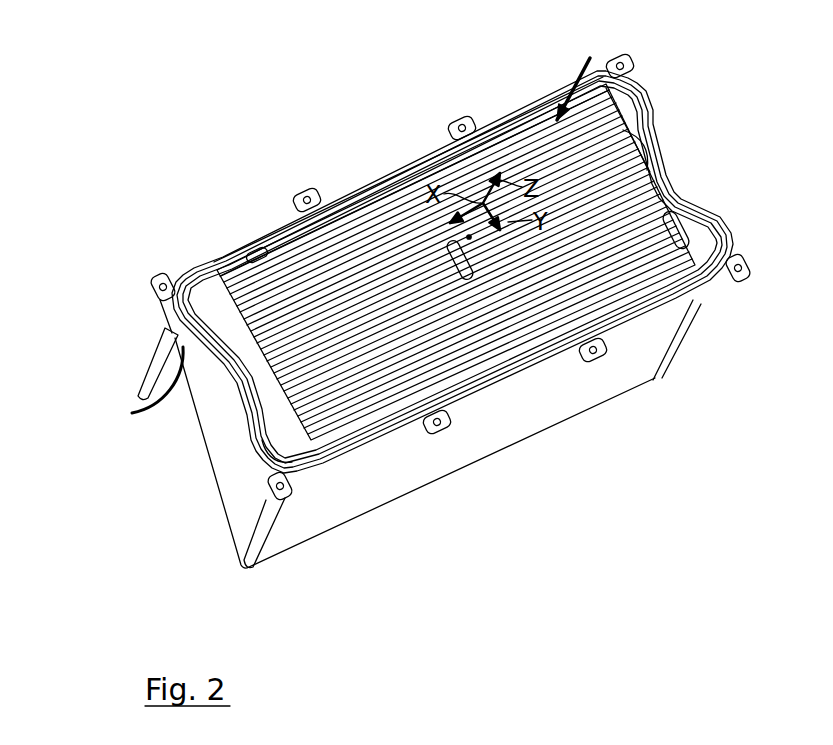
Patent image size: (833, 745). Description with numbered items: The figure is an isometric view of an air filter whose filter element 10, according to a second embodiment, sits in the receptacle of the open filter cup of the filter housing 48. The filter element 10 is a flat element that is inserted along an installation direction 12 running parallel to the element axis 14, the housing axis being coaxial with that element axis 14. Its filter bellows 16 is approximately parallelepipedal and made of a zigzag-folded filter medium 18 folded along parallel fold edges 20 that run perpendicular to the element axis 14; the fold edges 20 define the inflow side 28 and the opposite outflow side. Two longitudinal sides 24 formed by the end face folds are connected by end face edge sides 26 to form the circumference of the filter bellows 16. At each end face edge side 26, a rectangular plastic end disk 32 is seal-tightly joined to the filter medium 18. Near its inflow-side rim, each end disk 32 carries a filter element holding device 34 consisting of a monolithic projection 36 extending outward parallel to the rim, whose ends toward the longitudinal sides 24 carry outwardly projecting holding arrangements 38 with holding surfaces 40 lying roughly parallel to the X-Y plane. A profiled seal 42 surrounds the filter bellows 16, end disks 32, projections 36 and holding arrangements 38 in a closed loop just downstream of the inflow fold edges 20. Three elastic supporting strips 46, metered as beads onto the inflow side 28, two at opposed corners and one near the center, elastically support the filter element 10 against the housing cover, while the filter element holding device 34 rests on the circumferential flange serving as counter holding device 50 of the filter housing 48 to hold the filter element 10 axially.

The filter element 10 is at (437, 163).
The installation direction 12 is at (570, 70).
The element axis 14 is at (458, 255).
The filter bellows 16 is at (387, 203).
The filter medium 18 is at (610, 287).
The fold edges 20 is at (513, 140).
The longitudinal sides 24 is at (520, 362).
The end face edge sides 26 is at (628, 131).
The inflow side 28 is at (340, 230).
The end disk 32 is at (700, 243).
The filter element holding device 34 is at (283, 427).
The projection 36 is at (252, 370).
The holding arrangement 38 is at (207, 300).
The holding surface 40 is at (293, 438).
The seal 42 is at (720, 230).
The supporting strips 46 is at (247, 260).
The filter housing 48 is at (480, 427).
The counter holding device 50 is at (132, 413).